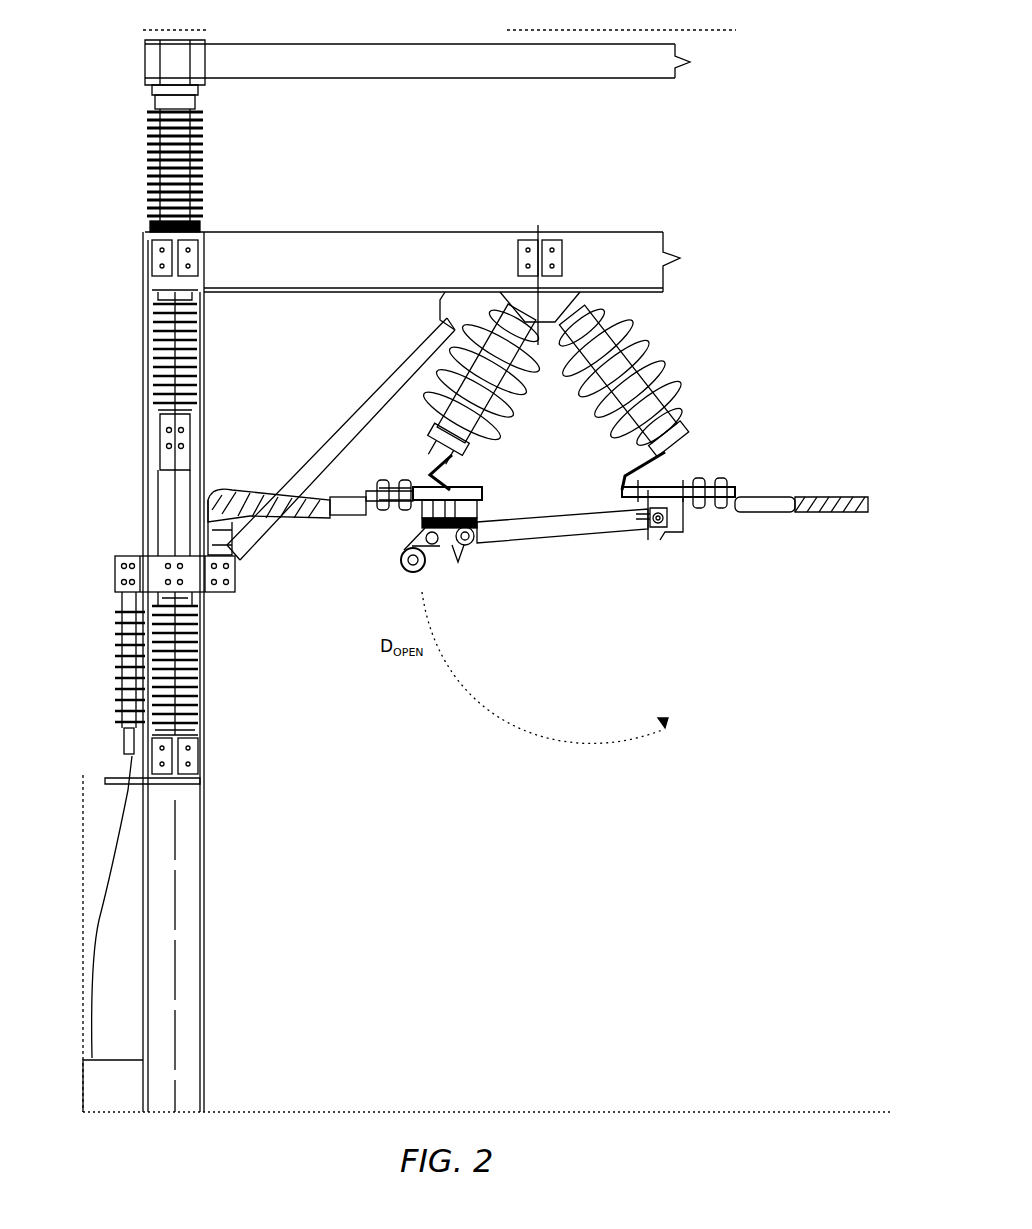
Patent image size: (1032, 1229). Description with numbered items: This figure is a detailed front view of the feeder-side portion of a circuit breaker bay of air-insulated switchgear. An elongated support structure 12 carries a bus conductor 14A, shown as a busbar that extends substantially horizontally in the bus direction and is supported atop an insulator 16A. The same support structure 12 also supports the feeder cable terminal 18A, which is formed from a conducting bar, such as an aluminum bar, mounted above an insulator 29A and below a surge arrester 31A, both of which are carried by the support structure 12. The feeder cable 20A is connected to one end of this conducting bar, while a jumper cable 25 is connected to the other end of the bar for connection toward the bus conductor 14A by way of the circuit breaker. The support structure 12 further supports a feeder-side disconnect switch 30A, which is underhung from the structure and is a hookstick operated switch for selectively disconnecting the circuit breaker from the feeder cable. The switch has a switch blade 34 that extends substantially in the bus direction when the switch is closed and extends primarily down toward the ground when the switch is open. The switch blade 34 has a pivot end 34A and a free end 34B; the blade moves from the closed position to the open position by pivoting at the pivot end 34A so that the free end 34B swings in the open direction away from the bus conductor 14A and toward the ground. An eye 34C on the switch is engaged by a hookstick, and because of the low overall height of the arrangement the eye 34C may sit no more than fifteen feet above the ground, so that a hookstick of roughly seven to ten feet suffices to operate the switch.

The support structure 12 is at (365, 232).
The bus conductor 14A is at (380, 44).
The insulator 16A is at (145, 156).
The feeder cable terminal 18A is at (106, 554).
The feeder cable 20A is at (110, 850).
The jumper cable 25 is at (300, 515).
The insulator 29A is at (196, 688).
The feeder-side disconnect switch 30A is at (700, 346).
The surge arrester 31A is at (210, 362).
The switch blade 34 is at (552, 524).
The pivot end 34A is at (658, 535).
The free end 34B is at (444, 555).
The eye 34C is at (404, 560).